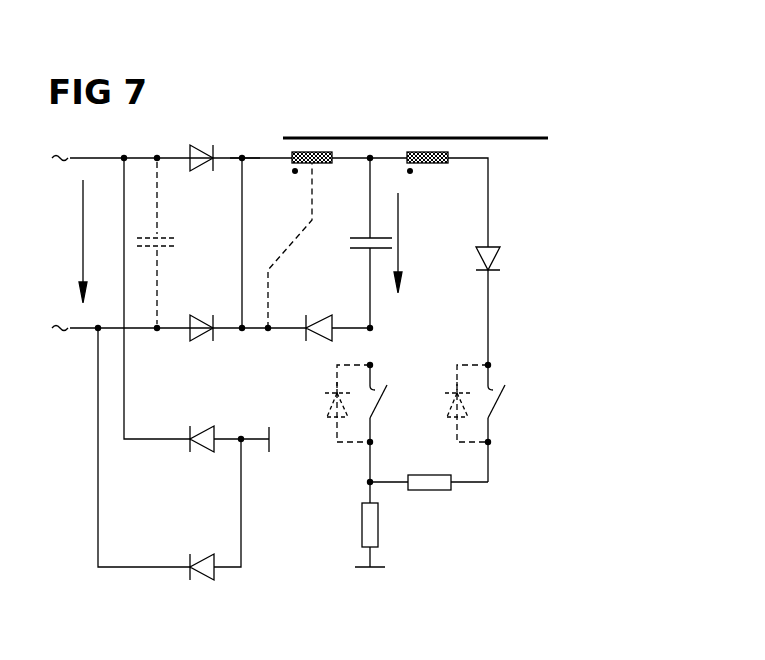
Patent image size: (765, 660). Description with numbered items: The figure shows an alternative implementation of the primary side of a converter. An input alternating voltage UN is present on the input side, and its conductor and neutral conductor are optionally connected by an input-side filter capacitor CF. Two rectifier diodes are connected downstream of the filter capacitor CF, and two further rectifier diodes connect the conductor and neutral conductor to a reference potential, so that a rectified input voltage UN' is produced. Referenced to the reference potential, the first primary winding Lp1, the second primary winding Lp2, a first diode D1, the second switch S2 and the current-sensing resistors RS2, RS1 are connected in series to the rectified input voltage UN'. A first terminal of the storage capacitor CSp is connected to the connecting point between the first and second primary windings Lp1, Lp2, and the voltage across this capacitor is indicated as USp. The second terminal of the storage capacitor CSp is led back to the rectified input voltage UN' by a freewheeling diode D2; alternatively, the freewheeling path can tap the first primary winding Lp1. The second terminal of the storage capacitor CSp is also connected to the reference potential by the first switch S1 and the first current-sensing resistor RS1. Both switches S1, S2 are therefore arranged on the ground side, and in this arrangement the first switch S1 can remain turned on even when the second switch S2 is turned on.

The input alternating voltage UN is at (67, 241).
The rectified input voltage UN' is at (242, 137).
The input-side filter capacitor CF is at (178, 243).
The first primary winding Lp1 is at (316, 165).
The second primary winding Lp2 is at (430, 165).
The storage capacitor CSp is at (362, 251).
The storage capacitor voltage USp is at (419, 243).
The first diode D1 is at (492, 262).
The freewheeling diode D2 is at (318, 336).
The first switch S1 is at (381, 403).
The second switch S2 is at (498, 403).
The first current-sensing resistor RS1 is at (362, 525).
The current-sensing resistor RS2 is at (428, 492).